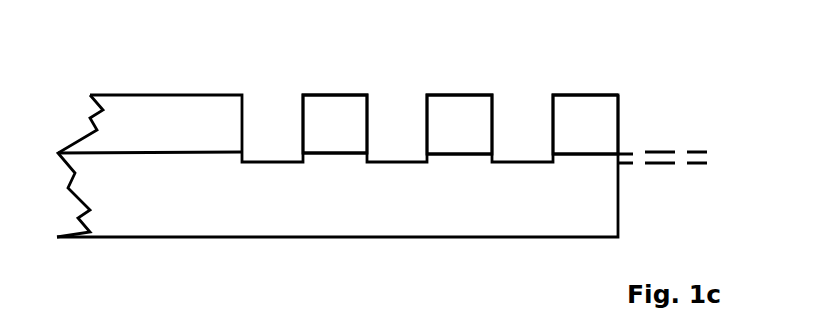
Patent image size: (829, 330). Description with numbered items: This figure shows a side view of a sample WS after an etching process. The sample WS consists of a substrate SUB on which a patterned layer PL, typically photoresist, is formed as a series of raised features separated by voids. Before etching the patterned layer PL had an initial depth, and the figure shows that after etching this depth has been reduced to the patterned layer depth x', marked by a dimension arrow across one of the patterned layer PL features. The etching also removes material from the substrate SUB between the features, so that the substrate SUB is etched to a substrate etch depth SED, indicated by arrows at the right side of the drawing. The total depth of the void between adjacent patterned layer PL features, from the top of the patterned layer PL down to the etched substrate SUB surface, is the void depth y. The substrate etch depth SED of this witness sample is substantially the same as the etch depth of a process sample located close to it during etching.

The patterned layer PL is at (352, 137).
The substrate SUB is at (384, 217).
The sample WS is at (637, 85).
The substrate etch depth SED is at (652, 132).
The depth of the void y is at (514, 99).
The patterned layer depth after etching x' is at (590, 124).